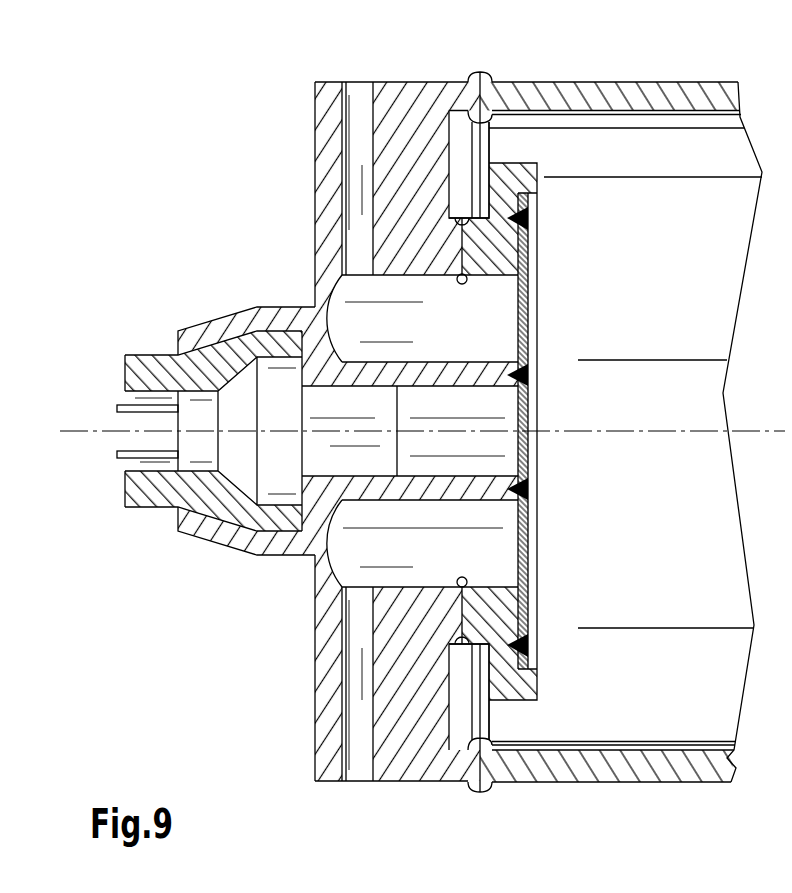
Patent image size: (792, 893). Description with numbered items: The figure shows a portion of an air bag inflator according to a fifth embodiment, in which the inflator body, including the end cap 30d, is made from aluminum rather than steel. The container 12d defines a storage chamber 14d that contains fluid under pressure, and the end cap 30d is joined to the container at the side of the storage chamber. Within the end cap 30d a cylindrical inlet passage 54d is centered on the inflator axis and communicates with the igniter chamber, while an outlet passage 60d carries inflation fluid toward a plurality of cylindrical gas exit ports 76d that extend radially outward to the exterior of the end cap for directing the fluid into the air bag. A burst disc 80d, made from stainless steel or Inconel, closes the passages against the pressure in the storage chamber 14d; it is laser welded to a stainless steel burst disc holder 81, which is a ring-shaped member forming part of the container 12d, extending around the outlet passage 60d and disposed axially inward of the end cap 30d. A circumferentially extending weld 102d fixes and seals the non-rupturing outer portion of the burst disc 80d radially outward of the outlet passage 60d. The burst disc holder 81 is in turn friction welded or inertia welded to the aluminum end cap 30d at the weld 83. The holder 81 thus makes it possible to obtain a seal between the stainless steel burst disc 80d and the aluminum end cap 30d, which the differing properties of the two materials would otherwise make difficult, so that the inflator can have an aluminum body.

The container 12d is at (548, 68).
The storage chamber 14d is at (642, 247).
The end cap 30d is at (312, 222).
The gas exit ports 76d is at (355, 108).
The outlet passage 60d is at (358, 552).
The inlet passage 54d is at (507, 445).
The burst disc 80d is at (530, 337).
The friction or inertia weld 83 is at (467, 585).
The second circumferentially extending weld 102d is at (512, 645).
The burst disc holder 81 is at (542, 688).